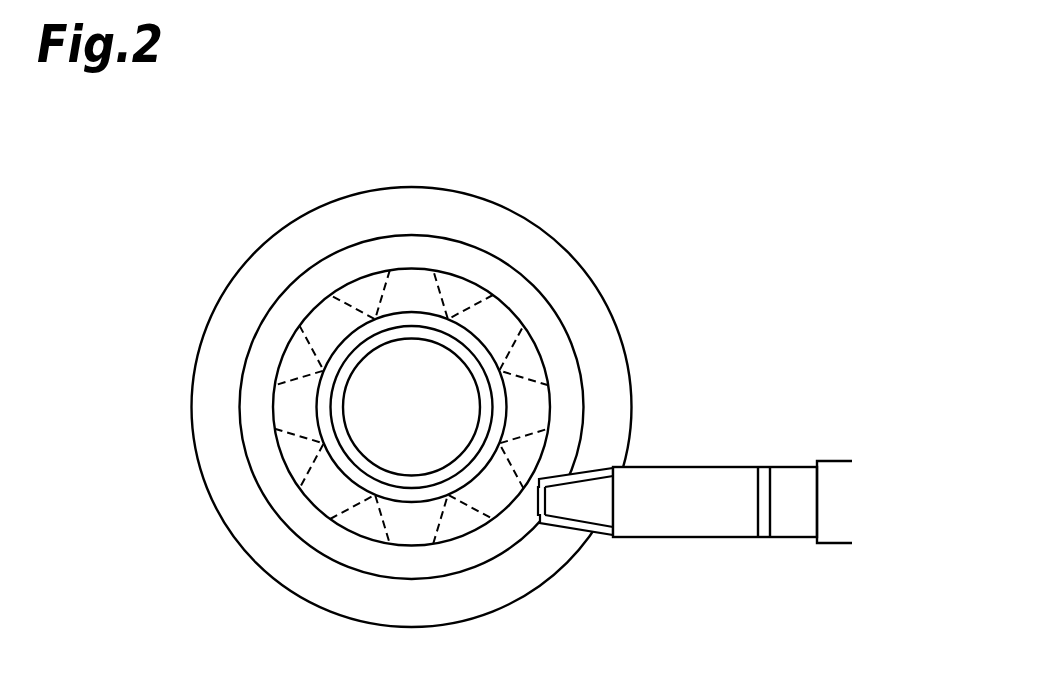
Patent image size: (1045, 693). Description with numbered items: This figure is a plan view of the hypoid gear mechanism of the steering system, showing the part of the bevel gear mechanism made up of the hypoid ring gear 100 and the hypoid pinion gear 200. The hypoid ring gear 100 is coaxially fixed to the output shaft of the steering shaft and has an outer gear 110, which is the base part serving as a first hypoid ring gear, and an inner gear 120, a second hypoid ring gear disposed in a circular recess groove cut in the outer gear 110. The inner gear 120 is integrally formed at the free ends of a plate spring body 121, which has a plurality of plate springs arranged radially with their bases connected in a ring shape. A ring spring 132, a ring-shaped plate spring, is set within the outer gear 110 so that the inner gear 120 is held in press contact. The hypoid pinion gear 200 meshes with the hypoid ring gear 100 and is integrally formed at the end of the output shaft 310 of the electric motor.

The hypoid ring gear 100 is at (479, 97).
The outer gear 110 is at (536, 234).
The inner gear 120 is at (455, 250).
The plate spring body 121 is at (290, 382).
The ring spring 132 is at (365, 287).
The hypoid pinion gear 200 is at (589, 468).
The output shaft 310 is at (712, 477).